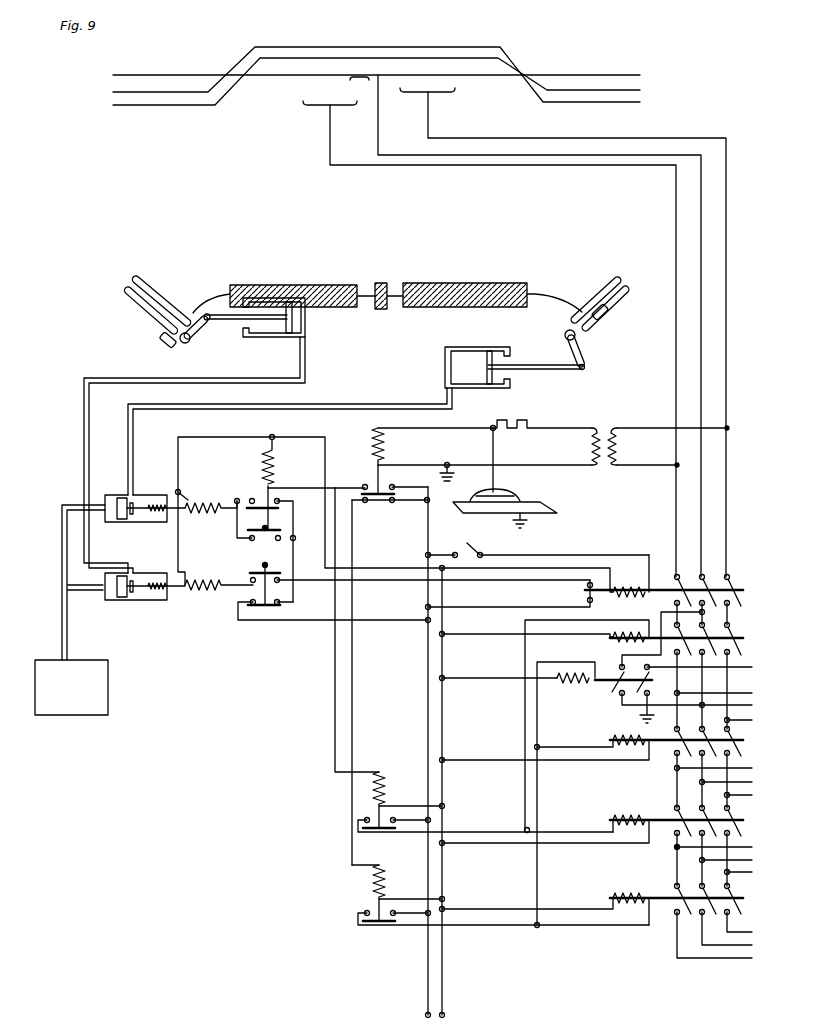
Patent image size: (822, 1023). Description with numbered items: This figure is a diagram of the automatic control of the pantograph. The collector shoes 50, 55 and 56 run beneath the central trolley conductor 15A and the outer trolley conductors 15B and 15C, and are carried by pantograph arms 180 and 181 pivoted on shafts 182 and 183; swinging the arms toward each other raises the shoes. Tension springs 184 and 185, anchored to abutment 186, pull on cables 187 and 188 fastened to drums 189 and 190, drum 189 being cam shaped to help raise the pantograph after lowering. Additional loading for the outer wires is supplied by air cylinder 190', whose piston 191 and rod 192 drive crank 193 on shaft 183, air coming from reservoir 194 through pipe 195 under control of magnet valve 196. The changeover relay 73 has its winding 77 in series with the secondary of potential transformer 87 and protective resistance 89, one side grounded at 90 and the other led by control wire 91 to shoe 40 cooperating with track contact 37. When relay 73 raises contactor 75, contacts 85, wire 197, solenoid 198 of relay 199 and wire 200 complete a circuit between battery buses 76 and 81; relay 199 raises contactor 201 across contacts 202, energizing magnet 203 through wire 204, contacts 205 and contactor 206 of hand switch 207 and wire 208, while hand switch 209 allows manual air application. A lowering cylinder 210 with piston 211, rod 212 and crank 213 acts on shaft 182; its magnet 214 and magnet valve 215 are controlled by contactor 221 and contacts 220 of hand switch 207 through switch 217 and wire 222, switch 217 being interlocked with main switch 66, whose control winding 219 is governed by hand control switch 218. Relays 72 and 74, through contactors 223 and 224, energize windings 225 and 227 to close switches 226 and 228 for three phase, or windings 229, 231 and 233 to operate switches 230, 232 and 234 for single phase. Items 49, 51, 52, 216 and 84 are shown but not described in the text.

The central trolley conductor 15A is at (636, 74).
The outer trolley conductor 15B is at (641, 102).
The outer trolley conductor 15C is at (641, 90).
The conductor 49 is at (380, 127).
The central collector shoe 50 is at (367, 80).
The conductor 51 is at (433, 127).
The conductor 52 is at (328, 127).
The trolley shoe 55 is at (308, 104).
The trolley shoe 56 is at (455, 92).
The pantograph arm 180 is at (132, 301).
The pantograph arm 181 is at (618, 295).
The shaft 182 is at (184, 344).
The shaft 183 is at (565, 334).
The tension spring 184 is at (330, 284).
The tension spring 185 is at (490, 283).
The abutment 186 is at (383, 283).
The cable 187 is at (198, 294).
The cable 188 is at (536, 294).
The drum 189 is at (162, 340).
The drum 190 is at (616, 319).
The air cylinder 190' is at (456, 367).
The piston 191 is at (487, 368).
The rod 192 is at (528, 370).
The crank 193 is at (585, 352).
The reservoir 194 is at (98, 698).
The pipe 195 is at (322, 405).
The magnet valve 196 is at (122, 494).
The wire 197 is at (286, 493).
The solenoid 198 is at (275, 470).
The relay 199 is at (260, 472).
The wire 200 is at (200, 441).
The contactor 201 is at (281, 512).
The contacts 202 is at (280, 501).
The magnet 203 is at (204, 503).
The wire 204 is at (368, 618).
The contacts 205 is at (250, 602).
The contactor 206 is at (262, 608).
The hand switch 207 is at (282, 598).
The wire 208 is at (293, 560).
The hand switch 209 is at (247, 530).
The cylinder 210 is at (306, 322).
The piston 211 is at (286, 330).
The rod 212 is at (235, 320).
The crank 213 is at (196, 331).
The magnet 214 is at (200, 598).
The magnet valve 215 is at (120, 603).
The fluid conduit 216 is at (84, 435).
The switch 217 is at (586, 592).
The hand control switch 218 is at (483, 551).
The control winding 219 is at (618, 590).
The contacts 220 is at (250, 580).
The contactor 221 is at (255, 571).
The wire 222 is at (492, 582).
The contactor 223 is at (378, 832).
The contactor 224 is at (378, 928).
The switch operating winding 225 is at (611, 640).
The switch 226 is at (738, 638).
The switch operating winding 227 is at (622, 818).
The switch 228 is at (740, 820).
The winding 229 is at (578, 684).
The switch 230 is at (612, 697).
The winding 231 is at (625, 748).
The switch 232 is at (740, 738).
The winding 233 is at (622, 896).
The switch 234 is at (740, 898).
The main switch 66 is at (738, 585).
The relay 72 is at (386, 792).
The changeover relay 73 is at (386, 447).
The relay 74 is at (386, 891).
The contactor 75 is at (385, 497).
The battery bus bar 76 is at (376, 428).
The relay winding 77 is at (372, 450).
The battery bus 81 is at (444, 699).
The contact 84 is at (366, 503).
The contacts 85 is at (364, 484).
The potential transformer 87 is at (604, 426).
The protective resistance 89 is at (507, 424).
The ground 90 is at (455, 474).
The control wire 91 is at (496, 455).
The shoe 40 is at (500, 494).
The track contact 37 is at (550, 505).